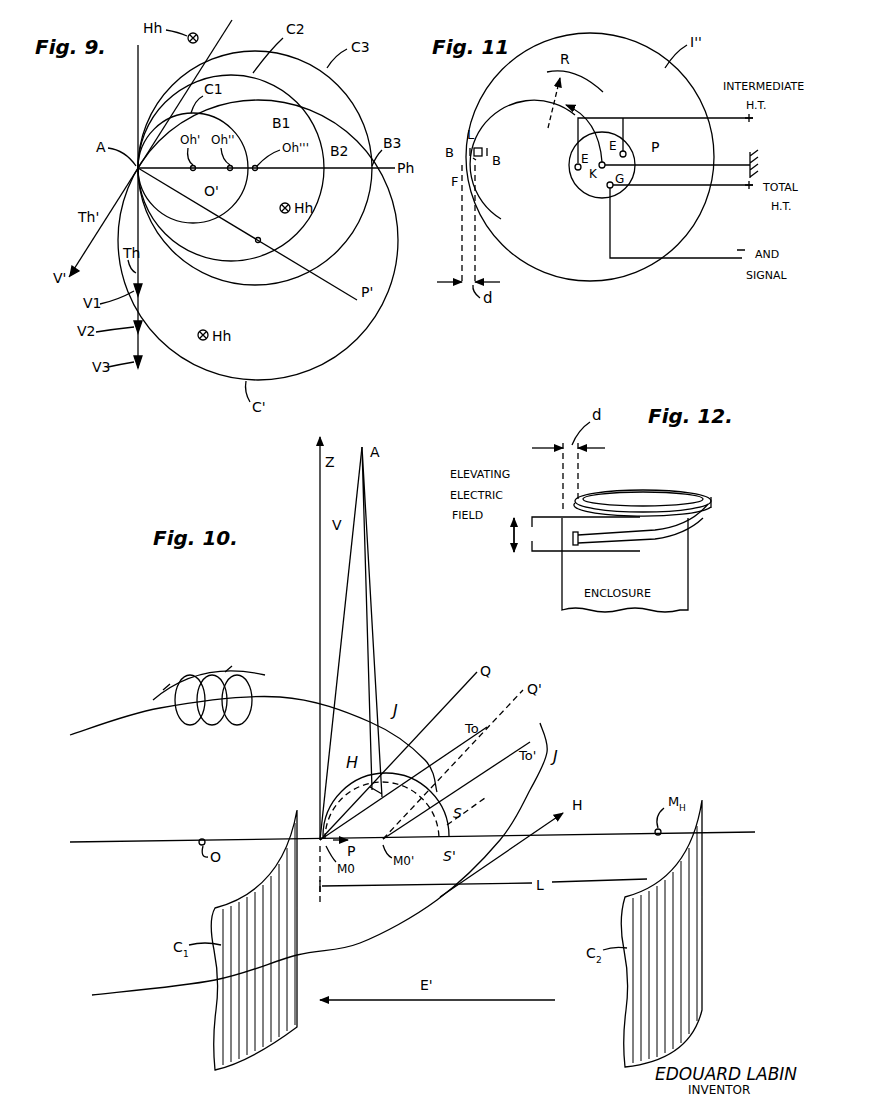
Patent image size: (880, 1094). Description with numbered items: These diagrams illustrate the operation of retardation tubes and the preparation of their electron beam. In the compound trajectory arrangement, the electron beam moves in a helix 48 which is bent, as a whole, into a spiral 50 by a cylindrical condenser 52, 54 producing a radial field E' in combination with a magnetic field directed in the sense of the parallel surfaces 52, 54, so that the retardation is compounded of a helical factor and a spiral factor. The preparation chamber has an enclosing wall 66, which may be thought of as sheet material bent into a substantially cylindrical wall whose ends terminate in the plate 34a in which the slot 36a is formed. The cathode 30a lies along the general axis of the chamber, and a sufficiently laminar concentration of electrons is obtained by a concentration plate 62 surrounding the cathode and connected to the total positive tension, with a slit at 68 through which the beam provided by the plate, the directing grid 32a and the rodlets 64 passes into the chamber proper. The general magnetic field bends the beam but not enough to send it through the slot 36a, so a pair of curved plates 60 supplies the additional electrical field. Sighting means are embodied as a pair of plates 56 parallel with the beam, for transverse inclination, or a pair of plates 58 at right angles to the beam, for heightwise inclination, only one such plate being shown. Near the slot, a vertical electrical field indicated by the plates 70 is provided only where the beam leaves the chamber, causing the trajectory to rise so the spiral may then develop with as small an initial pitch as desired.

In FIG. 11, the cathode 30a is at (598, 196).
In FIG. 11, the directing grid 32a is at (613, 188).
In FIG. 11, the plate 34a is at (486, 188).
In FIG. 11, the slot 36a is at (474, 166).
In FIG. 10, the helix 48 is at (215, 672).
In FIG. 10, the spiral 50 is at (278, 694).
In FIG. 10, the cylindrical condenser surface 52 is at (295, 936).
In FIG. 10, the cylindrical condenser surface 54 is at (627, 1008).
In FIG. 11, the sighting plates 56 is at (470, 146).
In FIG. 11, the sighting plate 58 is at (474, 159).
In FIG. 11, the curved plates 60 is at (583, 73).
In FIG. 11, the concentration plate 62 is at (634, 161).
In FIG. 11, the rodlets 64 is at (575, 170).
In FIG. 11, the enclosing wall 66 is at (693, 77).
In FIG. 11, the slit 68 is at (598, 128).
In FIG. 12, the plates 70 is at (552, 518).